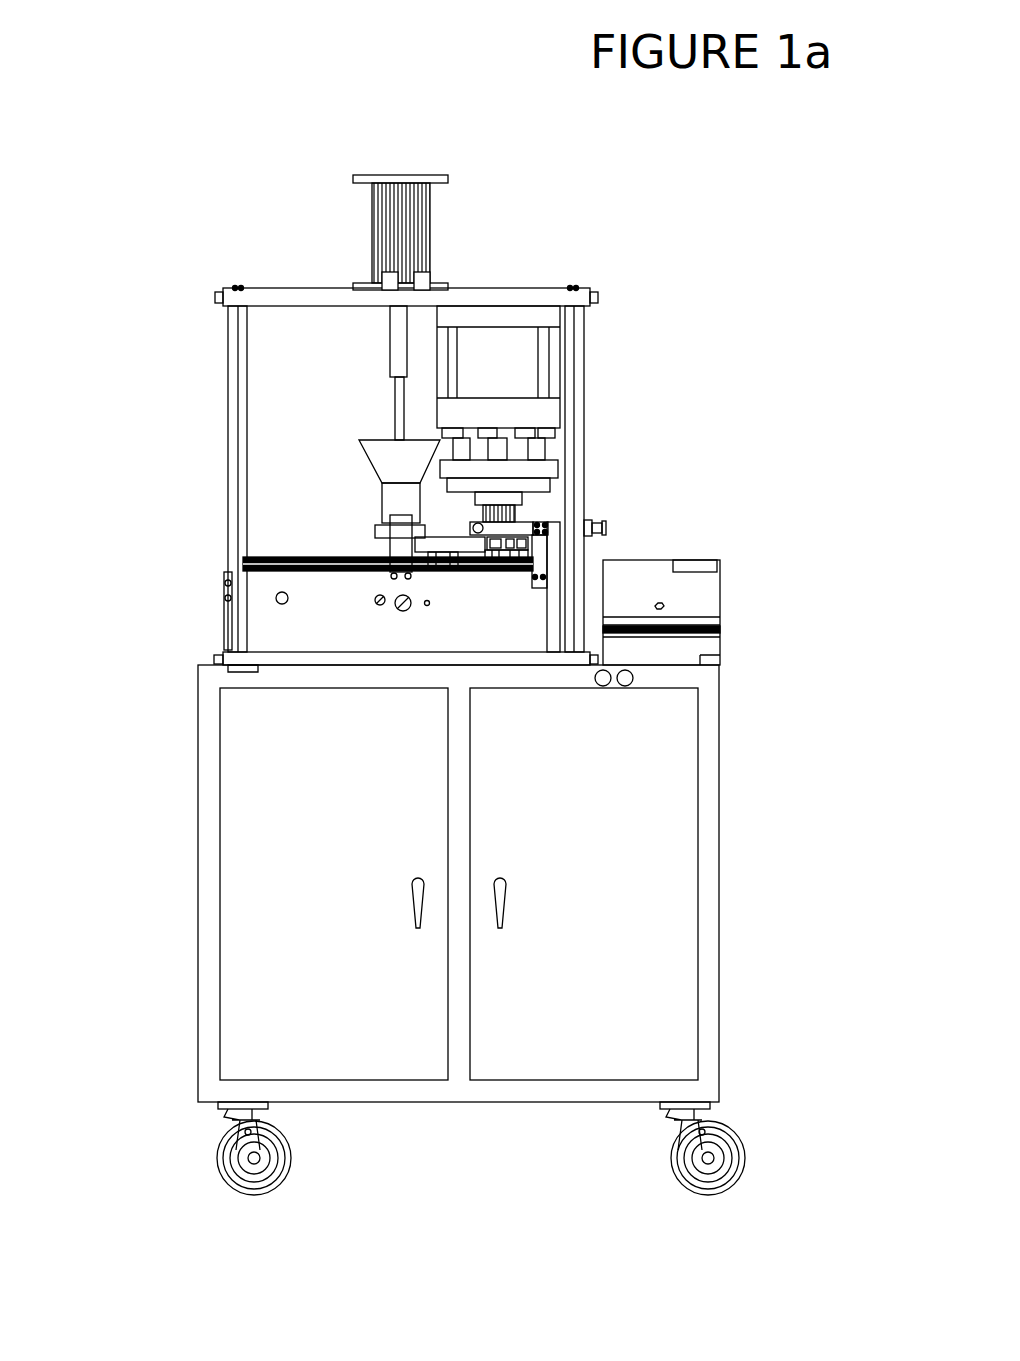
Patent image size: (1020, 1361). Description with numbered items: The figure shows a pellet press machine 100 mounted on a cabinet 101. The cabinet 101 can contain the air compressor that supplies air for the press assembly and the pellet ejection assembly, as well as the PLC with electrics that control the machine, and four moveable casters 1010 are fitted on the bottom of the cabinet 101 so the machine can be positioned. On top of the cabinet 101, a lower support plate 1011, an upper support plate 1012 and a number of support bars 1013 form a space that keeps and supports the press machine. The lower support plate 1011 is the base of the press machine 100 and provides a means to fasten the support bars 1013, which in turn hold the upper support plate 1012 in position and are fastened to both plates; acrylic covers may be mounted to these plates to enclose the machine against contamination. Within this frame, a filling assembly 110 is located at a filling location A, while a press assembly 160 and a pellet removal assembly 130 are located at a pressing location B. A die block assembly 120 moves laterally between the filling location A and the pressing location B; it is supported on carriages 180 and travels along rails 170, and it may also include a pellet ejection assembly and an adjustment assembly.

The press machine 100 is at (572, 194).
The cabinet 101 is at (709, 846).
The moveable casters 1010 is at (722, 1121).
The lower support plate 1011 is at (262, 663).
The upper support plate 1012 is at (262, 296).
The support bars 1013 is at (235, 478).
The filling assembly 110 is at (400, 405).
The die block assembly 120 is at (455, 545).
The pellet removal assembly 130 is at (520, 527).
The press assembly 160 is at (500, 455).
The rails 170 is at (262, 563).
The carriages 180 is at (500, 558).
The filling location A is at (400, 580).
The pressing location B is at (500, 578).